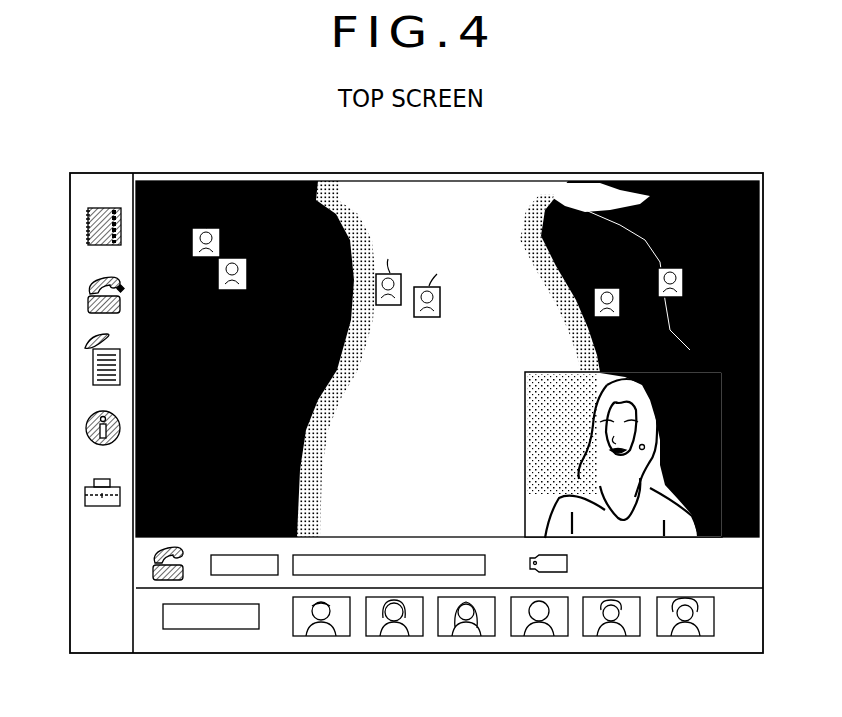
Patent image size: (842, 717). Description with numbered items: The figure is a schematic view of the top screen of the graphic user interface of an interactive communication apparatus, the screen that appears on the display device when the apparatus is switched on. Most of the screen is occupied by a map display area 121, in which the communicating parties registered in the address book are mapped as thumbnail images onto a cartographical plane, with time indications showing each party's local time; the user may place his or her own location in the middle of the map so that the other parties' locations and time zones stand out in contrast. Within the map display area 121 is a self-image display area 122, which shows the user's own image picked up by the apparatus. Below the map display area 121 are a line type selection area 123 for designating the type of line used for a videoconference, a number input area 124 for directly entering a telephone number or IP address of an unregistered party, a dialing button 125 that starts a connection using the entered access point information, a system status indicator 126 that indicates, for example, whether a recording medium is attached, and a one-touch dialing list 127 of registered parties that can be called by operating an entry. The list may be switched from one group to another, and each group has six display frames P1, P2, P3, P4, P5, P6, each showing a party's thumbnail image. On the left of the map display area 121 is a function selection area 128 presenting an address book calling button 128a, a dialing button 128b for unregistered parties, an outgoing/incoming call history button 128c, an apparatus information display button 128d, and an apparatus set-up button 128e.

The map display area 121 is at (725, 184).
The self-image display area 122 is at (722, 504).
The line type selection area 123 is at (265, 582).
The number input area 124 is at (296, 582).
The dialing button 125 is at (142, 566).
The system status indicator 126 is at (726, 568).
The one-touch dialing list 127 is at (732, 622).
The function selection area 128 is at (108, 182).
The address book calling button 128a is at (86, 232).
The dialing button 128b is at (88, 302).
The outgoing/incoming call history button 128c is at (92, 367).
The apparatus information display button 128d is at (86, 431).
The apparatus set-up button 128e is at (85, 495).
The display frame P1 is at (344, 640).
The display frame P2 is at (374, 640).
The display frame P3 is at (443, 640).
The display frame P4 is at (516, 640).
The display frame P5 is at (588, 640).
The display frame P6 is at (662, 640).